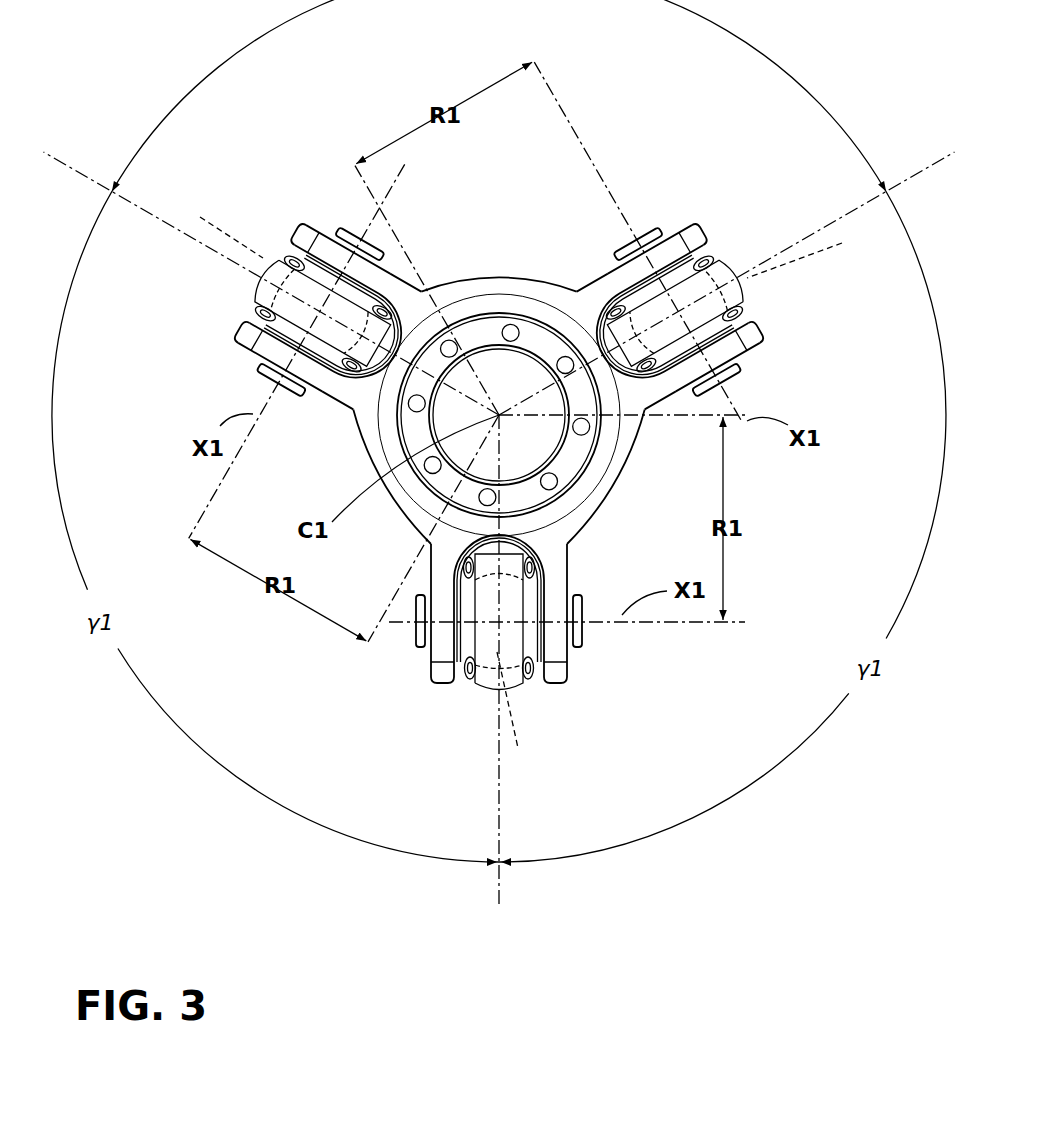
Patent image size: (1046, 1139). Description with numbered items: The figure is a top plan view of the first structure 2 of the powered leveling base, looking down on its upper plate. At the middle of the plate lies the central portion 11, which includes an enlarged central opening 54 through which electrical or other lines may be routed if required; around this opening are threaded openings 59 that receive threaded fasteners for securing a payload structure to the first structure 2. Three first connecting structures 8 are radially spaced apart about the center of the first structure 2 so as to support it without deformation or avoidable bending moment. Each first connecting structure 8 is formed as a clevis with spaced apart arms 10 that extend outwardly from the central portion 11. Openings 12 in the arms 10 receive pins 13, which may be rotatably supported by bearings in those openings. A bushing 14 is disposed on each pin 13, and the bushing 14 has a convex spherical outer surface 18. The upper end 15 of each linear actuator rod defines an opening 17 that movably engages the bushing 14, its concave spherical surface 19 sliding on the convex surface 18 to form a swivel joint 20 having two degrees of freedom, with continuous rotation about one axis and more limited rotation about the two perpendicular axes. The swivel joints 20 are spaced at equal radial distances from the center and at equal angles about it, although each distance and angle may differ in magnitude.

The first structure 2 is at (528, 272).
The first connecting structures 8 is at (428, 659).
The arms 10 is at (428, 672).
The central portion 11 is at (475, 290).
The openings 12 is at (418, 600).
The pins 13 is at (428, 660).
The bushing 14 is at (527, 680).
The upper end 15 is at (490, 682).
The opening 17 is at (470, 668).
The convex spherical outer surface 18 is at (560, 665).
The concave spherical surface 19 is at (523, 487).
The swivel joint 20 is at (587, 577).
The enlarged central opening 54 is at (523, 437).
The threaded openings 59 is at (508, 326).